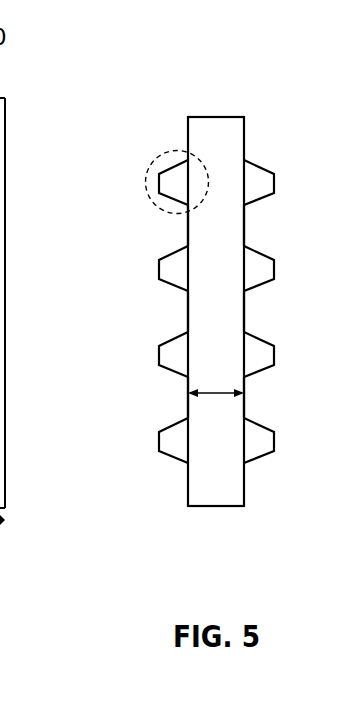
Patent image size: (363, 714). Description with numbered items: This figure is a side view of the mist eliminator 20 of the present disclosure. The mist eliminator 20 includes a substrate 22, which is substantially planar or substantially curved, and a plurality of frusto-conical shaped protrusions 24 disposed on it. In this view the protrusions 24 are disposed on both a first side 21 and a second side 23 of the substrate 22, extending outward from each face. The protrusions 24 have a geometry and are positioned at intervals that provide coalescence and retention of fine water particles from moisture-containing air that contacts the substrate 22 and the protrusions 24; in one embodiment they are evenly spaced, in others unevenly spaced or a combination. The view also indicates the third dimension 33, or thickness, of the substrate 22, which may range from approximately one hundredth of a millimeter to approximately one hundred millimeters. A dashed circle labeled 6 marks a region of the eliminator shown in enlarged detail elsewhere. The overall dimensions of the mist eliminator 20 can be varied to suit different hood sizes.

The mist eliminator 20 is at (212, 72).
The substrate 22 is at (217, 487).
The frusto-conical shaped protrusions 24 is at (159, 183).
The first side 21 is at (188, 235).
The second side 23 is at (244, 235).
The third dimension 33 is at (211, 391).
The detail region (FIG. 6) 6 is at (182, 150).